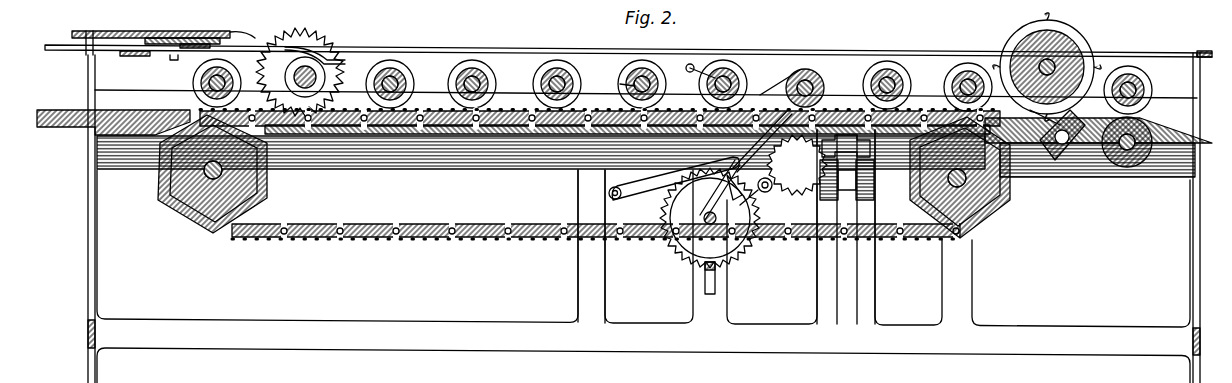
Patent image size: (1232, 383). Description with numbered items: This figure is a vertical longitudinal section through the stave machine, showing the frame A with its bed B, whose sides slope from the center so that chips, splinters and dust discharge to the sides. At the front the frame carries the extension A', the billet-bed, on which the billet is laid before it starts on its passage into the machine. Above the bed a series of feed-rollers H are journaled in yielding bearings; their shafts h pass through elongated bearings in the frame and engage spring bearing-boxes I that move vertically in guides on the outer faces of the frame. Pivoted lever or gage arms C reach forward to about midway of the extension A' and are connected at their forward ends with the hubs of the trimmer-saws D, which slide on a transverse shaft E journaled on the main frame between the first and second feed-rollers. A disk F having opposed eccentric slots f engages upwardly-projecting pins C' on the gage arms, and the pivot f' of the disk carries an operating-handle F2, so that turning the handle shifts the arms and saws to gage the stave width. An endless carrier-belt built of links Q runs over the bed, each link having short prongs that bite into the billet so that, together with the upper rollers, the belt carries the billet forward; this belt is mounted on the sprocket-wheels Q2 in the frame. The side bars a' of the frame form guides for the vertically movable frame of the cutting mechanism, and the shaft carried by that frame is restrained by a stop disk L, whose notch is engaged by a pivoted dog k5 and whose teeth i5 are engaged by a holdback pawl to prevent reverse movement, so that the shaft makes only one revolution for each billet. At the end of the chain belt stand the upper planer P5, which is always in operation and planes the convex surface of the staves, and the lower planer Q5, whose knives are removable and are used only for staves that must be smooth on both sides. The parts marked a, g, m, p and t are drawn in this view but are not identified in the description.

The frame A is at (628, 214).
The billet-bed extension A' is at (611, 115).
The bed B is at (520, 158).
The gage arms C is at (208, 58).
The pins C' is at (156, 68).
The trimmer-saws D is at (313, 77).
The transverse shaft E is at (300, 72).
The disk F is at (195, 40).
The operating-handle F2 is at (195, 44).
The eccentric slots f is at (242, 28).
The pivot f' is at (162, 77).
The feed-rollers H is at (597, 77).
The roller shafts h is at (414, 82).
The spring bearing-boxes I is at (1150, 90).
The stop disk L is at (710, 218).
The chain links Q is at (910, 258).
The sprocket-wheels Q2 is at (267, 175).
The lower planer Q5 is at (1060, 165).
The upper planer P5 is at (1080, 50).
The chain pin a is at (616, 207).
The side bars a' is at (726, 227).
The arm g is at (812, 70).
The teeth i5 is at (734, 197).
The pivoted dog k5 is at (660, 193).
The pawl m is at (765, 192).
The rod p is at (762, 139).
The roller t is at (617, 75).